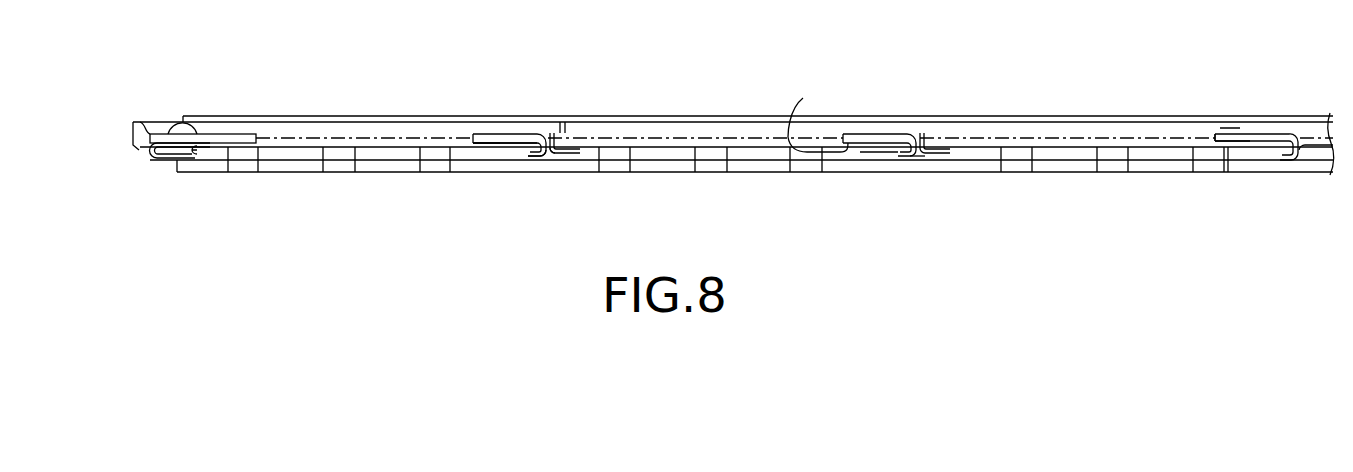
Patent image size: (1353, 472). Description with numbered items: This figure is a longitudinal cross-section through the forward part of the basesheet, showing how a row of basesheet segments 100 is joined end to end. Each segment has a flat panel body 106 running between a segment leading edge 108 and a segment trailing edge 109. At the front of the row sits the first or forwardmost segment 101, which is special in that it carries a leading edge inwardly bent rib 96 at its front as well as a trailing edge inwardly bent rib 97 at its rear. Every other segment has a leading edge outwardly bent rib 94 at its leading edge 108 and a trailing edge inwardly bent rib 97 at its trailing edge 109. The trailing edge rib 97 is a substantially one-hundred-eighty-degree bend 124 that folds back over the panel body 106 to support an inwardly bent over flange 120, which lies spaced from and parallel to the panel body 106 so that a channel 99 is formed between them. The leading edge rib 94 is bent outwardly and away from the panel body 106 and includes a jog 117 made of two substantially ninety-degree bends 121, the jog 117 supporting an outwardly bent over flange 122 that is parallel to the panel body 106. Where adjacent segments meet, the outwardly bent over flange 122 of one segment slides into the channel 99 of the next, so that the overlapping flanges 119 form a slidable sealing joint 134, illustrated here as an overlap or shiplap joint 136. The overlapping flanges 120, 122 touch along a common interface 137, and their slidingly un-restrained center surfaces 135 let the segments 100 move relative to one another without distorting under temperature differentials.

The basesheet segment 100 is at (687, 160).
The first or forwardmost segment 101 is at (342, 152).
The panel body 106 is at (400, 162).
The leading edge inwardly bent rib 96 is at (163, 155).
The outwardly bent over flange 122 is at (505, 133).
The substantially 90 degree bend 121 is at (533, 133).
The leading edge outwardly bent rib 94 is at (550, 143).
The jog 117 is at (567, 140).
The trailing edge inwardly bent rib 97 is at (535, 150).
The channel 99 is at (540, 156).
The segment trailing edge 109 is at (547, 157).
The segment leading edge 108 is at (550, 158).
The inwardly bent over flange 120 is at (483, 146).
The slidingly un-restrained center surface 135 is at (818, 115).
The overlapping flanges 119 is at (868, 152).
The substantially 180 degree bend 124 is at (907, 160).
The slidable sealing joint 134 is at (1215, 135).
The overlap or shiplap joint 136 is at (1297, 128).
The common interface 137 is at (1228, 148).